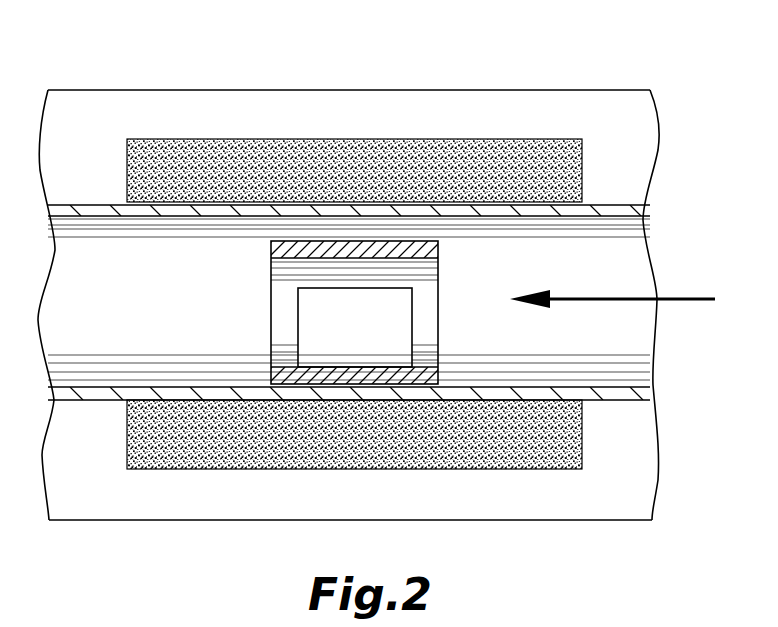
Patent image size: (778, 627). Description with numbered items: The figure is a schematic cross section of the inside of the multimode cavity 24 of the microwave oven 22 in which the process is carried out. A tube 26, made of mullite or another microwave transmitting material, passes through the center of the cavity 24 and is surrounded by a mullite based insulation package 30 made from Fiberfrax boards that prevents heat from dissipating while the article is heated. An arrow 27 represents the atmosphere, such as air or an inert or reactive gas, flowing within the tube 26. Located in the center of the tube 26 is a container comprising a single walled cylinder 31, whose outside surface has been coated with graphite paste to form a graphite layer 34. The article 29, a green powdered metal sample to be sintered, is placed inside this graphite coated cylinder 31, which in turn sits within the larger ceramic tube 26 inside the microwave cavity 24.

The microwave oven 22 is at (583, 88).
The multimode cavity 24 is at (194, 107).
The tube 26 is at (612, 207).
The arrow 27 is at (617, 299).
The article 29 is at (362, 345).
The insulation package 30 is at (570, 160).
The cylinder 31 is at (283, 373).
The graphite layer 34 is at (268, 244).